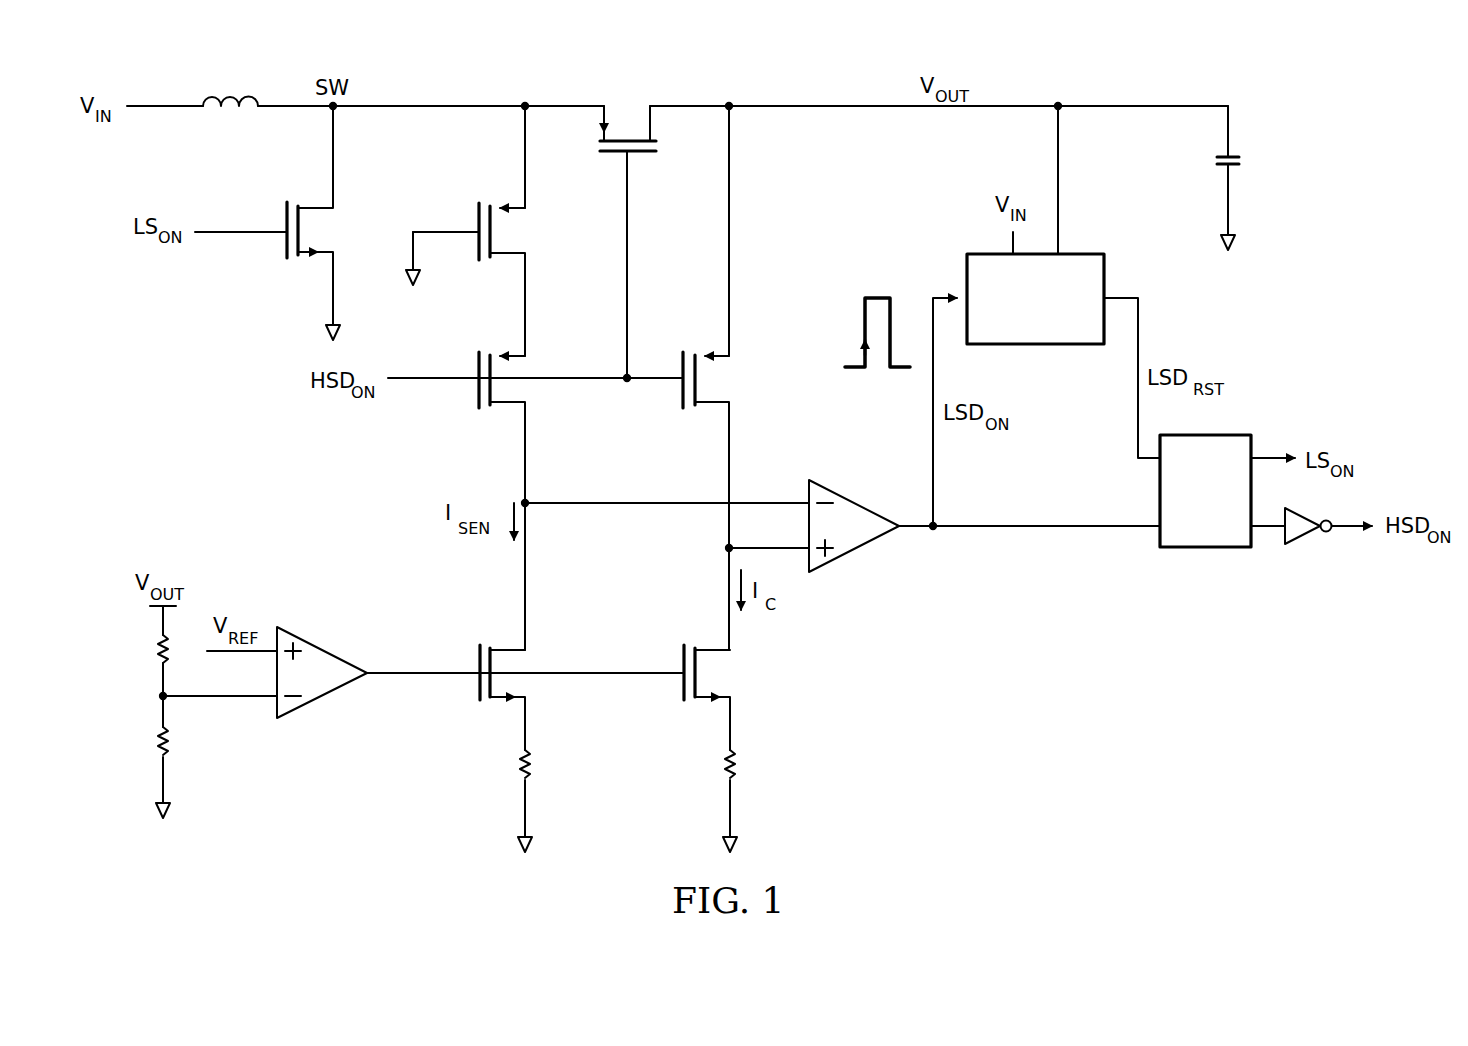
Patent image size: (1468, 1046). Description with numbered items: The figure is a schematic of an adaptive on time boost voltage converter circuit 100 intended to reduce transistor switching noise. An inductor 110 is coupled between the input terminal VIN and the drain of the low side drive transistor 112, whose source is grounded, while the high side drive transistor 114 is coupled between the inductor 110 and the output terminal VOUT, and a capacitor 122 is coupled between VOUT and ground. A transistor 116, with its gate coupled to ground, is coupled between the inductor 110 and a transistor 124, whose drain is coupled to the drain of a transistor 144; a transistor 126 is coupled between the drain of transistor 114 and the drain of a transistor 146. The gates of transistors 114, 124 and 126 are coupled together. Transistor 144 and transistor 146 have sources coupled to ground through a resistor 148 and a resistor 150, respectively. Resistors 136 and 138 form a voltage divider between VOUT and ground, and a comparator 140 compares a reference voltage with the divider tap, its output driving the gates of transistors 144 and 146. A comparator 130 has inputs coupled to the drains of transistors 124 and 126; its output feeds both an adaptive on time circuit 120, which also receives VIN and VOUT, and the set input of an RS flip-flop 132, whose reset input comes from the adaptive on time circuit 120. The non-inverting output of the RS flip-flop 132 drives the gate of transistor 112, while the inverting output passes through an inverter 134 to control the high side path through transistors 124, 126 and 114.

The adaptive on time boost voltage converter circuit 100 is at (1112, 68).
The inductor 110 is at (228, 90).
The low side drive transistor 112 is at (280, 213).
The high side drive transistor 114 is at (617, 156).
The transistor 116 is at (473, 213).
The adaptive on time circuit 120 is at (1035, 346).
The capacitor 122 is at (1245, 163).
The transistor 124 is at (473, 361).
The transistor 126 is at (678, 392).
The comparator 130 is at (855, 552).
The RS flip-flop 132 is at (1205, 549).
The inverter 134 is at (1306, 538).
The resistor 136 is at (155, 648).
The resistor 138 is at (155, 740).
The comparator 140 is at (322, 697).
The transistor 144 is at (474, 688).
The transistor 146 is at (679, 688).
The resistor 148 is at (518, 765).
The resistor 150 is at (737, 766).